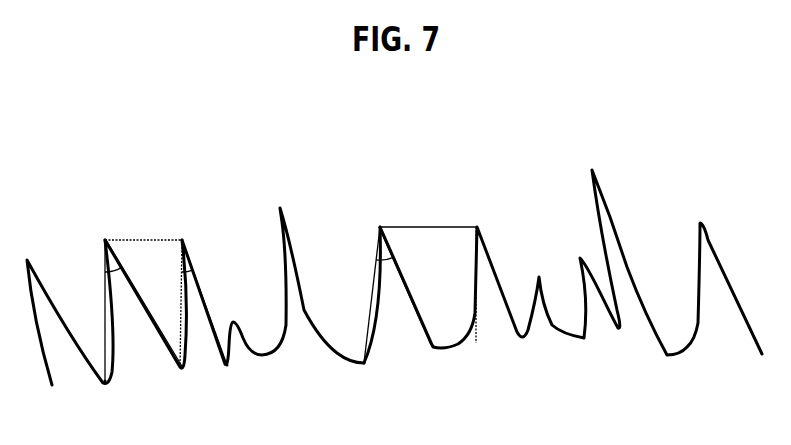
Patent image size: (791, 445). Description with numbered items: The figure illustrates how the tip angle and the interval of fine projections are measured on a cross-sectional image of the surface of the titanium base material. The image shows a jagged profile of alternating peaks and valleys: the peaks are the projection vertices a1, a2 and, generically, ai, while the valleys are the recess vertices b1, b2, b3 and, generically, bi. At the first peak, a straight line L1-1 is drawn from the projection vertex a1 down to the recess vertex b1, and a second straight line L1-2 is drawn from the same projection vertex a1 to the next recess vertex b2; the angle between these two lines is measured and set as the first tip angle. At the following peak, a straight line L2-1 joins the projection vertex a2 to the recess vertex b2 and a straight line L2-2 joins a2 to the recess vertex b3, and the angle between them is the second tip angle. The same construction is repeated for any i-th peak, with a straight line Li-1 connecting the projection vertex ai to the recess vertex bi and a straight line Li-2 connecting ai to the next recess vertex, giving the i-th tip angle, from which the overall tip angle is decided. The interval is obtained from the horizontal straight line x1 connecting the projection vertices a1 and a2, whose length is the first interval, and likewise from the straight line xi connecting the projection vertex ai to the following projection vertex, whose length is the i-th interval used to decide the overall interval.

The projection vertex a1 is at (96, 231).
The projection vertex a2 is at (185, 231).
The projection vertex ai is at (377, 218).
The recess vertex b1 is at (109, 395).
The recess vertex b2 is at (188, 382).
The recess vertex b3 is at (229, 379).
The recess vertex bi is at (365, 379).
The straight line x1 is at (143, 226).
The straight line xi is at (428, 216).
The straight line L1-1 is at (106, 330).
The straight line L1-2 is at (164, 328).
The straight line L2-1 is at (172, 366).
The straight line L2-2 is at (217, 332).
The straight line Li-1 is at (354, 295).
The straight line Li-2 is at (416, 286).